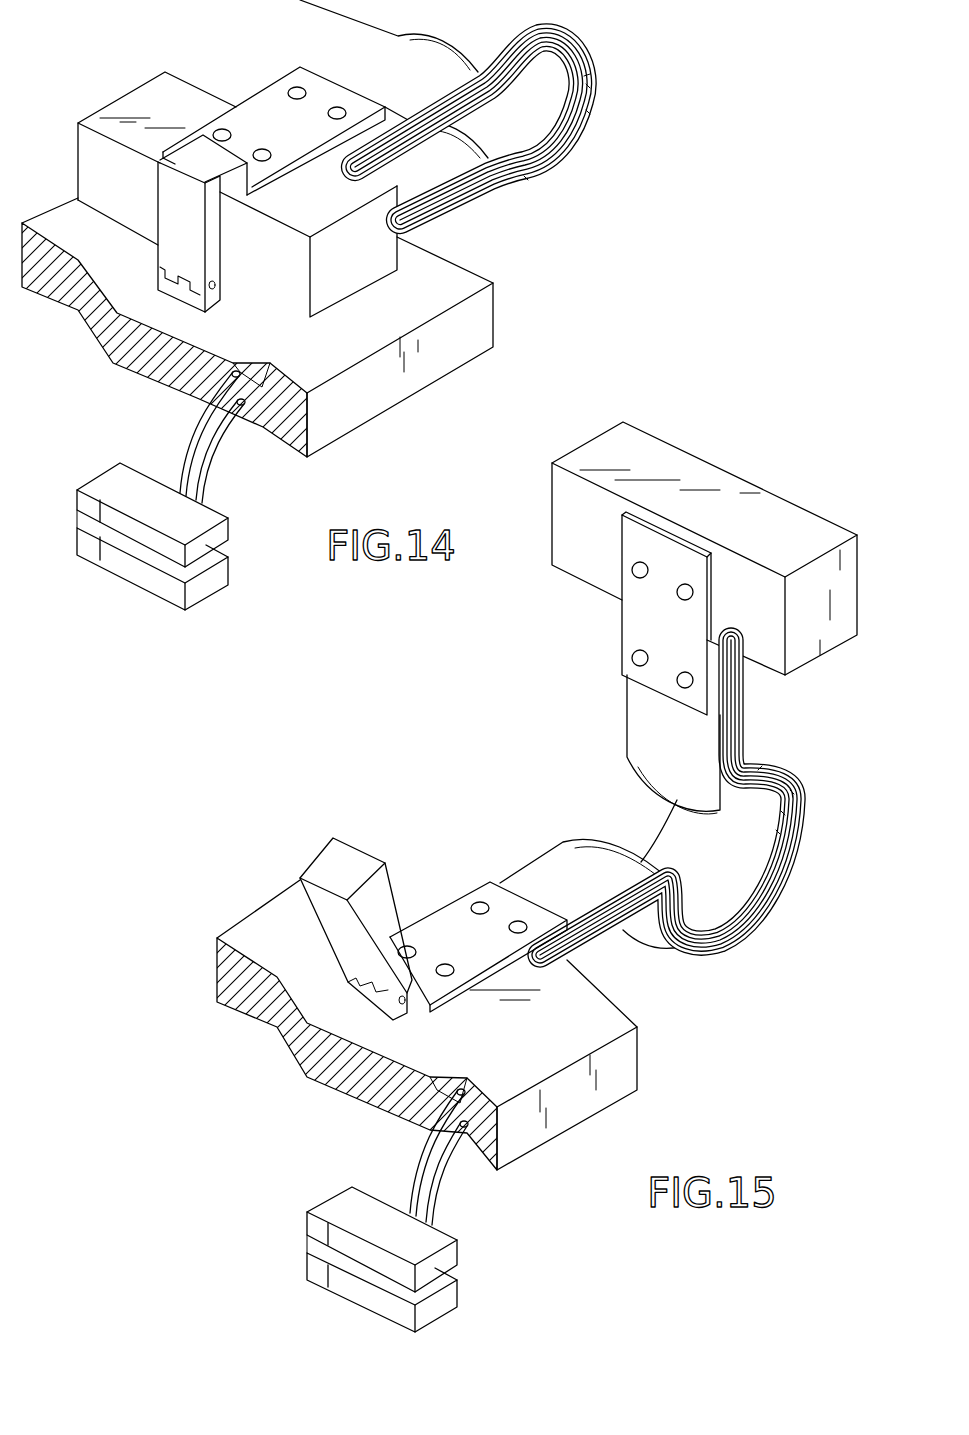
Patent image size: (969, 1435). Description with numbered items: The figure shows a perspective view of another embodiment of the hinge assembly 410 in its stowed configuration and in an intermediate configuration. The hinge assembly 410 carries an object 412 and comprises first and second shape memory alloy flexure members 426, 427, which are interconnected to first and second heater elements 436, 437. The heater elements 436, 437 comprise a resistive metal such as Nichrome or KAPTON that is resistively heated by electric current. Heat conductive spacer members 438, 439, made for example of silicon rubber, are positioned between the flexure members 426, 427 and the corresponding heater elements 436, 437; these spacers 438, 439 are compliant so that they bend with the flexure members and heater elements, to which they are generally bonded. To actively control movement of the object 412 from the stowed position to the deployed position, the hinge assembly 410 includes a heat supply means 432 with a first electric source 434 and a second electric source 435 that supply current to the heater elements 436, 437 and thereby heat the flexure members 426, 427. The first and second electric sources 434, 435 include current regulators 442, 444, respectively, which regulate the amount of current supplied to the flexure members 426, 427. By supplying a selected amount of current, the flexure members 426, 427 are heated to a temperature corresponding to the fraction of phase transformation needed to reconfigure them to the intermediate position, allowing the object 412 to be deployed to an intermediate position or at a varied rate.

In FIG. 14, the hinge assembly 410 is at (624, 147).
In FIG. 15, the hinge assembly 410 is at (329, 775).
In FIG. 14, the object 412 is at (362, 267).
In FIG. 15, the object 412 is at (826, 602).
In FIG. 14, the first shape memory alloy flexure member 426 is at (445, 170).
In FIG. 15, the first shape memory alloy flexure member 426 is at (601, 889).
In FIG. 14, the second shape memory alloy flexure member 427 is at (588, 100).
In FIG. 15, the second shape memory alloy flexure member 427 is at (788, 802).
In FIG. 14, the heat supply means 432 is at (256, 534).
In FIG. 15, the heat supply means 432 is at (484, 1264).
In FIG. 14, the first electric source 434 is at (163, 507).
In FIG. 15, the first electric source 434 is at (392, 1230).
In FIG. 14, the second electric source 435 is at (147, 580).
In FIG. 15, the second electric source 435 is at (343, 1283).
In FIG. 14, the first heater element 436 is at (585, 86).
In FIG. 15, the first heater element 436 is at (783, 813).
In FIG. 14, the second heater element 437 is at (526, 177).
In FIG. 15, the second heater element 437 is at (760, 768).
In FIG. 14, the heat conductive spacer member 438 is at (582, 78).
In FIG. 15, the heat conductive spacer member 438 is at (778, 832).
In FIG. 14, the heat conductive spacer member 439 is at (588, 112).
In FIG. 15, the heat conductive spacer member 439 is at (792, 792).
In FIG. 14, the current regulator 442 is at (86, 468).
In FIG. 15, the current regulator 442 is at (308, 1194).
In FIG. 14, the current regulator 444 is at (70, 533).
In FIG. 15, the current regulator 444 is at (294, 1247).